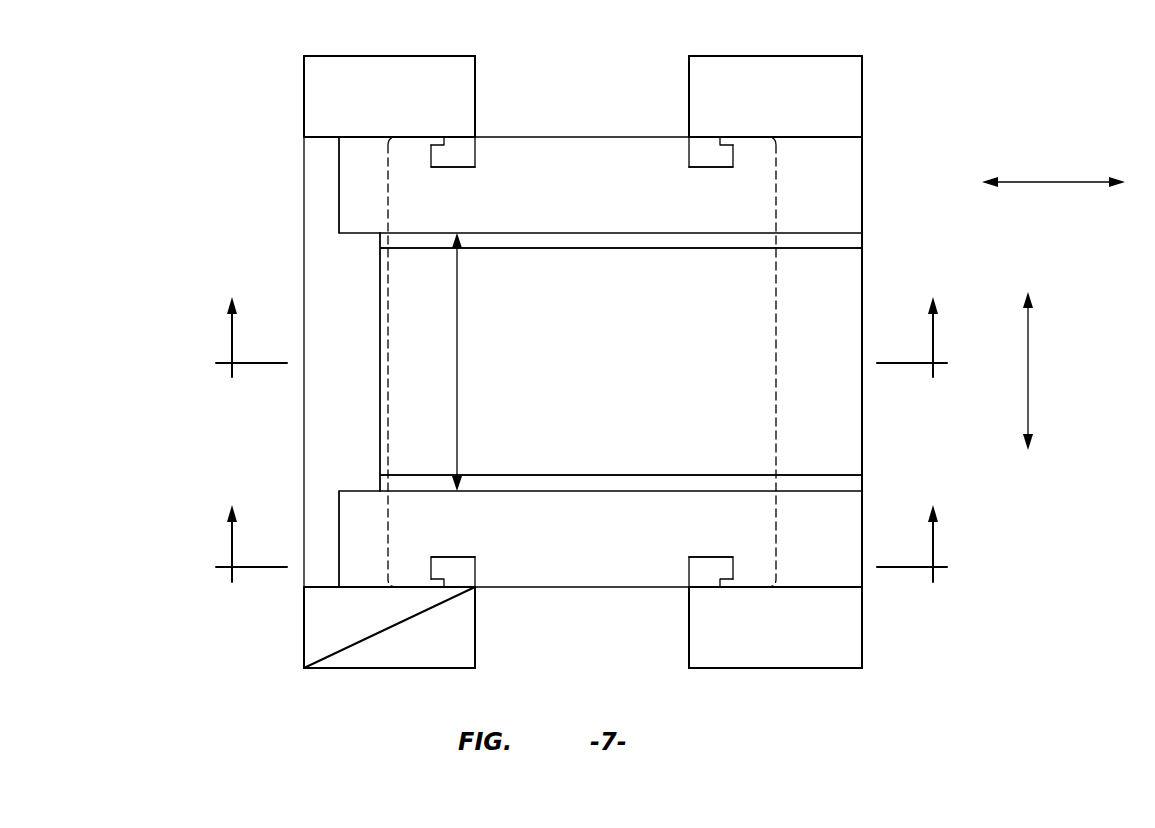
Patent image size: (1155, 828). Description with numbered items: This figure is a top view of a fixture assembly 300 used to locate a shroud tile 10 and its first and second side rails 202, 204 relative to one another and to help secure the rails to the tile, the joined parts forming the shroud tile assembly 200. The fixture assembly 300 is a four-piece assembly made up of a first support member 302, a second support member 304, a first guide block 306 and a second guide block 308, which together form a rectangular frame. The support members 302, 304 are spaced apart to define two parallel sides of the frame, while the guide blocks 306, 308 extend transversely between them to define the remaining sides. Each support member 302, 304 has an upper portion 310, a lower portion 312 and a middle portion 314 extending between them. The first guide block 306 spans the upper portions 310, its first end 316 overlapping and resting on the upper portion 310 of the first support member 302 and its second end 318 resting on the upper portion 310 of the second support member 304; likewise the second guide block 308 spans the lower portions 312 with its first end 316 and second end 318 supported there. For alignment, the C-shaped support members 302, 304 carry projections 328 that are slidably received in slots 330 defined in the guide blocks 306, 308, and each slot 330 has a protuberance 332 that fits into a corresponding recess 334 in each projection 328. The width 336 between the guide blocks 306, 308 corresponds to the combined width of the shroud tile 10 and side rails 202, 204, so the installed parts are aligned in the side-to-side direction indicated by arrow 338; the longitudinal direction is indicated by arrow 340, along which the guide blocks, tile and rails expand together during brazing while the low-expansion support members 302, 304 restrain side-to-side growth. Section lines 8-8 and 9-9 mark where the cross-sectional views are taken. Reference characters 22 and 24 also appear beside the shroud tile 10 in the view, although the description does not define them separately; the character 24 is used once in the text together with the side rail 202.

The fixture assembly 300 is at (946, 97).
The first support member 302 is at (324, 277).
The second support member 304 is at (854, 611).
The first guide block 306 is at (566, 150).
The second guide block 308 is at (569, 575).
The upper portion 310 is at (320, 148).
The lower portion 312 is at (318, 646).
The middle portion 314 is at (323, 423).
The first end 316 is at (337, 190).
The second end 318 is at (862, 182).
The projection 328 is at (460, 152).
The slot 330 is at (453, 168).
The protuberance 332 is at (444, 140).
The recess 334 is at (467, 143).
The width 336 is at (457, 333).
The side-to-side direction 338 is at (1030, 373).
The longitudinal direction 340 is at (1046, 182).
The shroud tile assembly 200 is at (862, 285).
The first side rail 202 is at (611, 258).
The second side rail 204 is at (610, 466).
The first side rail 22 is at (380, 383).
The side rail 24 is at (862, 437).
The shroud tile 10 is at (557, 377).
The section line 9- 9 is at (581, 336).
The section line 8- 8 is at (583, 541).